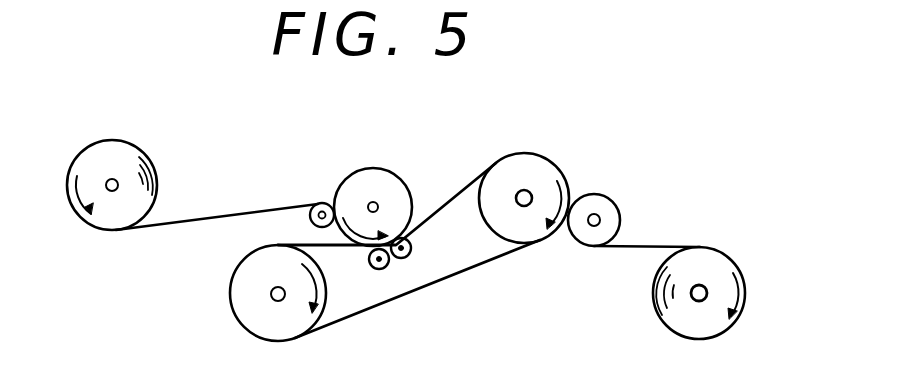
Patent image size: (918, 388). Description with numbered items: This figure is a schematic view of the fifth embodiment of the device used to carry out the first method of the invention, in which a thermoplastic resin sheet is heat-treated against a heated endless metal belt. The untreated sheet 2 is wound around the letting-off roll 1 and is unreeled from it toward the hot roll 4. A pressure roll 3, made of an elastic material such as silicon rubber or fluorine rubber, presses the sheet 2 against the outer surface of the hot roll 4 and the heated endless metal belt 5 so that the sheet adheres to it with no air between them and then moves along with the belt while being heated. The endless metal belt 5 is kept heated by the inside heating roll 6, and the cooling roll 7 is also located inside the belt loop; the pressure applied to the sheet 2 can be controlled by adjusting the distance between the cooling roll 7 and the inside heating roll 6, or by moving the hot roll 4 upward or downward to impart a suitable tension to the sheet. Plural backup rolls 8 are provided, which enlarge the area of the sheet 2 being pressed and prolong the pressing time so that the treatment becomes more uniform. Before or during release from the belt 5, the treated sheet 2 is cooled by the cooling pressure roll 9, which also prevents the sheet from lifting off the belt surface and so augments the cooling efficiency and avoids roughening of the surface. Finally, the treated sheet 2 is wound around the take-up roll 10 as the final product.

The letting-off roll 1 is at (112, 185).
The untreated sheet 2 is at (233, 211).
The pressure roll 3 is at (310, 222).
The hot roll 4 is at (373, 207).
The endless metal belt 5 is at (497, 258).
The inside heating roll 6 is at (278, 293).
The cooling roll 7 is at (524, 198).
The backup roll 8 is at (401, 259).
The cooling pressure roll 9 is at (606, 195).
The take-up roll 10 is at (708, 248).